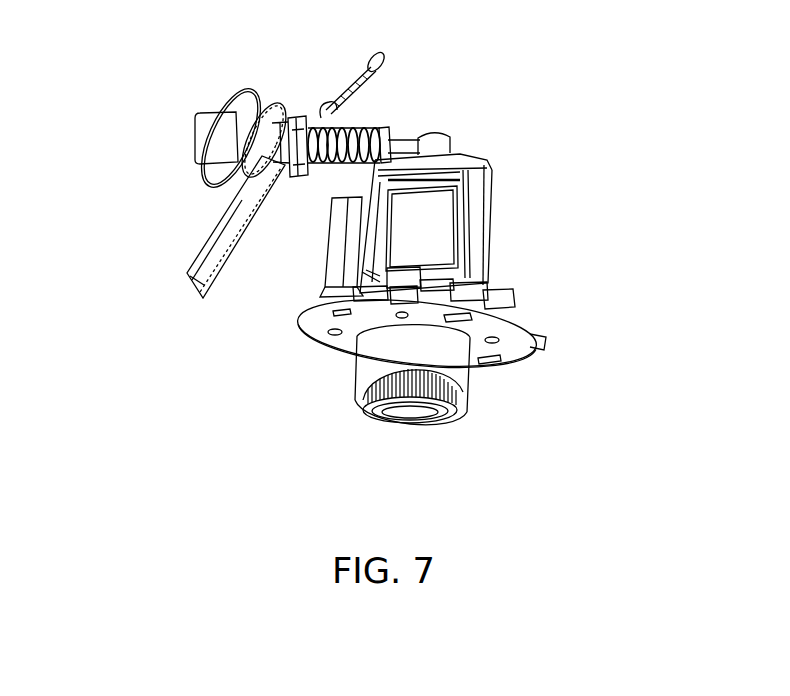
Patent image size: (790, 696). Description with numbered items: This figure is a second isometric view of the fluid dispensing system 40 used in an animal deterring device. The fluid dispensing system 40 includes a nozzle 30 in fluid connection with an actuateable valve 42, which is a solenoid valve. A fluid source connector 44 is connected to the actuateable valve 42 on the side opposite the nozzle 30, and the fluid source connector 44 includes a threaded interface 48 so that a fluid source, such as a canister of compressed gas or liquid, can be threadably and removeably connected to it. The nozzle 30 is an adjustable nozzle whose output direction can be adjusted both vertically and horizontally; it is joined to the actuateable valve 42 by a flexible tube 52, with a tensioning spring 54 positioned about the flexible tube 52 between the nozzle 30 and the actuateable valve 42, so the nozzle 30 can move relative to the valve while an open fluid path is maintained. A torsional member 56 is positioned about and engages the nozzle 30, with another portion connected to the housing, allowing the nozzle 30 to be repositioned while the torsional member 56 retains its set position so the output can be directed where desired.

The nozzle 30 is at (195, 147).
The fluid dispensing system 40 is at (535, 148).
The actuateable valve 42 is at (440, 230).
The fluid source connector 44 is at (518, 327).
The threaded interface 48 is at (380, 417).
The flexible tube 52 is at (337, 130).
The tensioning spring 54 is at (386, 122).
The torsional member 56 is at (248, 88).